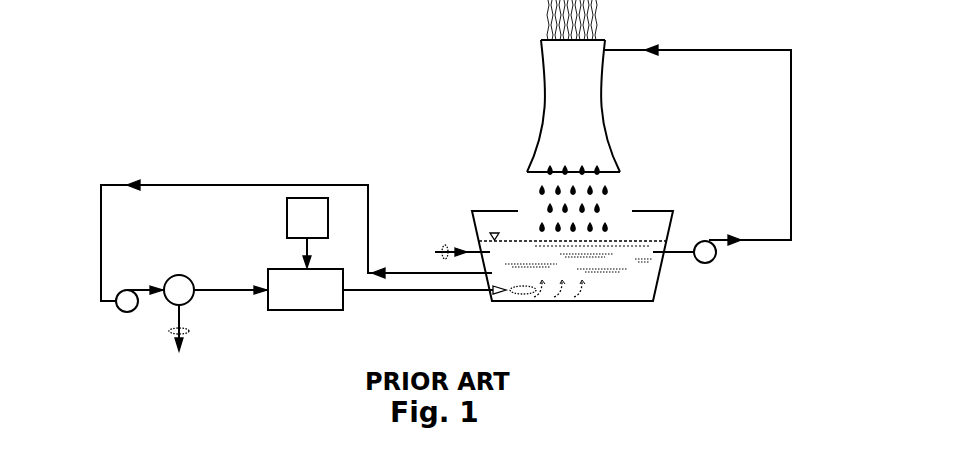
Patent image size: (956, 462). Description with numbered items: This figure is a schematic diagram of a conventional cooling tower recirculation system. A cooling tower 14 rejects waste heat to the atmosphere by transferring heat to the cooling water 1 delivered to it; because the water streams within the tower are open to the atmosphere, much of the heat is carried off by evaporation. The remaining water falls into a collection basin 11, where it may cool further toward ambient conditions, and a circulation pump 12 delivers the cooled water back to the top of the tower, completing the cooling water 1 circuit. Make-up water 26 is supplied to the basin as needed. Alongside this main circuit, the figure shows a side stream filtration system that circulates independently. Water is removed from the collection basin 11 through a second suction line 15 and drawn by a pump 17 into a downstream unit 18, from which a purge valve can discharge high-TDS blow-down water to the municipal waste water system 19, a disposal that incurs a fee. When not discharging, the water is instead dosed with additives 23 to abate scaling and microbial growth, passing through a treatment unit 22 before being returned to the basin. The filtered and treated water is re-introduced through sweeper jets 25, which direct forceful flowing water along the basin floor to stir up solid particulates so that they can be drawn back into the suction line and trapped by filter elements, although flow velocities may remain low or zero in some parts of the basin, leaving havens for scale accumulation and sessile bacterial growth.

The cooling water 1 is at (683, 50).
The collection basin 11 is at (502, 210).
The circulation pump 12 is at (700, 241).
The cooling tower 14 is at (545, 78).
The second suction line 15 is at (410, 272).
The pump 17 is at (122, 290).
The mixing unit 18 is at (190, 277).
The municipal waste water system 19 is at (190, 333).
The treatment unit 22 is at (270, 269).
The additives 23 is at (287, 213).
The sweeper jets 25 is at (507, 296).
The make-up water 26 is at (445, 250).